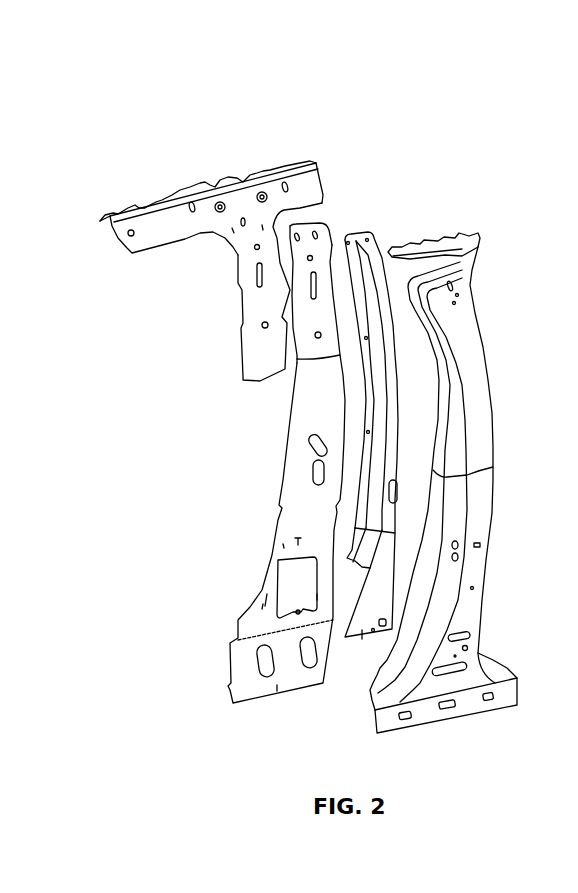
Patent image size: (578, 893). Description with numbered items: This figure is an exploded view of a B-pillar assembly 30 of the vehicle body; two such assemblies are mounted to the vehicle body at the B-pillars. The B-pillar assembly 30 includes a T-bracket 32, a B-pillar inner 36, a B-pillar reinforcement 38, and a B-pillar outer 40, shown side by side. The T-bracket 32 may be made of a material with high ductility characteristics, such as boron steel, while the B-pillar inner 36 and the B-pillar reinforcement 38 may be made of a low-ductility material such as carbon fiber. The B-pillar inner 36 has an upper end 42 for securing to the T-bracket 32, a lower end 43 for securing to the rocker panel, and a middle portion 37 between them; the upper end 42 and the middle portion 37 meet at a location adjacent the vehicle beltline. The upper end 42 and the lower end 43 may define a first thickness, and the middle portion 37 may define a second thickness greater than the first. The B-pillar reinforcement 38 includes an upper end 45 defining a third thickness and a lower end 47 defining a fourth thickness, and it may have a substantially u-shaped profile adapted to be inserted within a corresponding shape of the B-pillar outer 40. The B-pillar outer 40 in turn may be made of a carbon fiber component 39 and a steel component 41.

The B-pillar assembly 30 is at (348, 66).
The T-bracket 32 is at (272, 158).
The B-pillar inner 36 is at (326, 224).
The middle portion 37 is at (282, 492).
The B-pillar reinforcement 38 is at (375, 228).
The carbon fiber component 39 is at (489, 367).
The B-pillar outer 40 is at (466, 235).
The steel component 41 is at (492, 513).
The upper end 42 is at (293, 405).
The lower end 43 is at (232, 645).
The upper end 45 is at (396, 363).
The lower end 47 is at (362, 638).